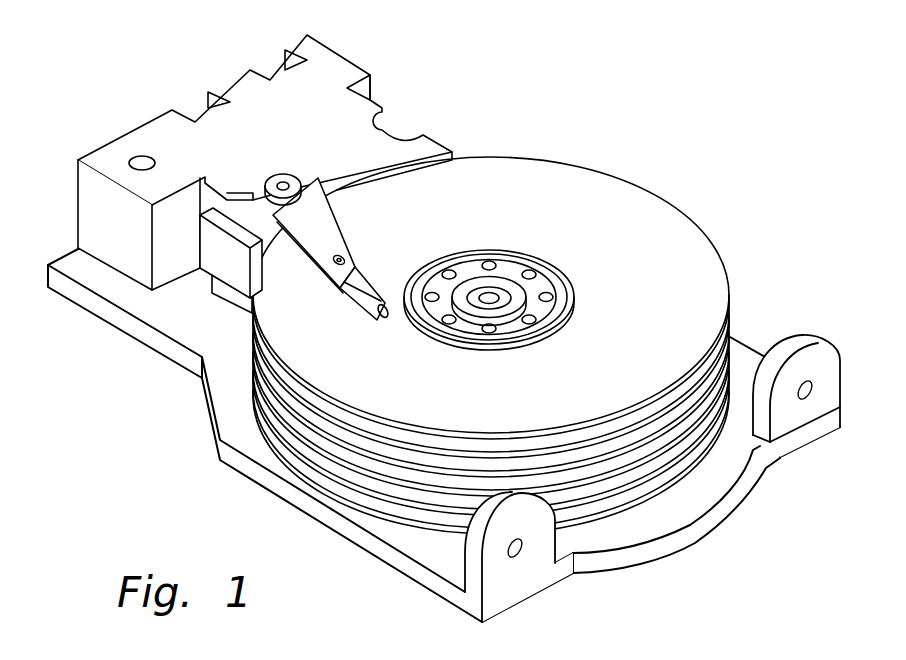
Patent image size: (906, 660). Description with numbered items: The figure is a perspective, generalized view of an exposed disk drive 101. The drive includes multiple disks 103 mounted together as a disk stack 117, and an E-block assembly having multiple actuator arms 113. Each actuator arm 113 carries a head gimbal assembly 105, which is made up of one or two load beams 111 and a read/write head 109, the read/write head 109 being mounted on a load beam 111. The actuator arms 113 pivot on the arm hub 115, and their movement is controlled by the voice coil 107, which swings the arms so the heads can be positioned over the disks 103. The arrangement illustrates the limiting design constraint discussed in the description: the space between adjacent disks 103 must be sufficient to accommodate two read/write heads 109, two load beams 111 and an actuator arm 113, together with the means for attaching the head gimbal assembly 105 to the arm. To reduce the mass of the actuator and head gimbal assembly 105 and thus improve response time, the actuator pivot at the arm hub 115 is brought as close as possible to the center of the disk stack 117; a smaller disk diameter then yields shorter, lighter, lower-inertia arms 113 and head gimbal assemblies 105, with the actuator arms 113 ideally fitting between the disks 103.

The disk drive 101 is at (444, 321).
The disks 103 is at (678, 455).
The head gimbal assembly 105 is at (358, 275).
The voice coil 107 is at (218, 82).
The read/write head 109 is at (385, 327).
The load beam 111 is at (350, 300).
The actuator arm 113 is at (330, 222).
The arm hub 115 is at (283, 178).
The disk stack 117 is at (497, 298).